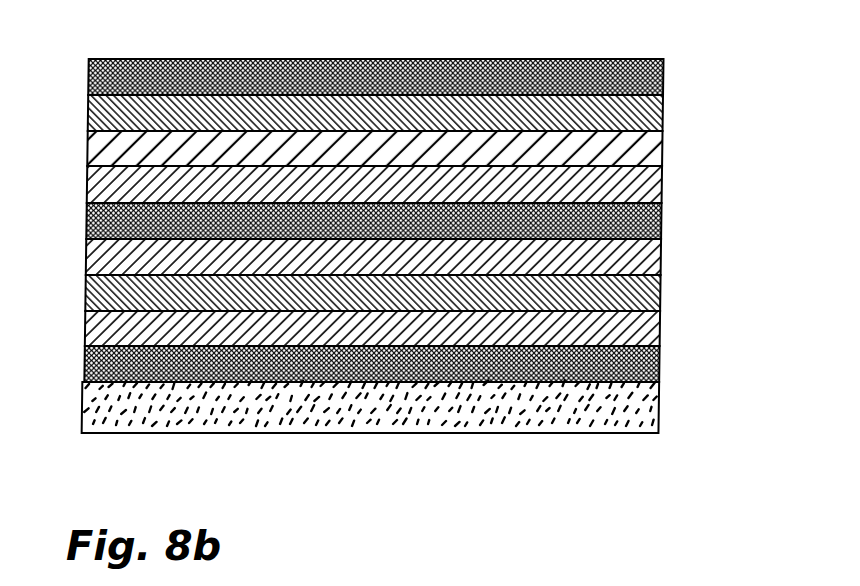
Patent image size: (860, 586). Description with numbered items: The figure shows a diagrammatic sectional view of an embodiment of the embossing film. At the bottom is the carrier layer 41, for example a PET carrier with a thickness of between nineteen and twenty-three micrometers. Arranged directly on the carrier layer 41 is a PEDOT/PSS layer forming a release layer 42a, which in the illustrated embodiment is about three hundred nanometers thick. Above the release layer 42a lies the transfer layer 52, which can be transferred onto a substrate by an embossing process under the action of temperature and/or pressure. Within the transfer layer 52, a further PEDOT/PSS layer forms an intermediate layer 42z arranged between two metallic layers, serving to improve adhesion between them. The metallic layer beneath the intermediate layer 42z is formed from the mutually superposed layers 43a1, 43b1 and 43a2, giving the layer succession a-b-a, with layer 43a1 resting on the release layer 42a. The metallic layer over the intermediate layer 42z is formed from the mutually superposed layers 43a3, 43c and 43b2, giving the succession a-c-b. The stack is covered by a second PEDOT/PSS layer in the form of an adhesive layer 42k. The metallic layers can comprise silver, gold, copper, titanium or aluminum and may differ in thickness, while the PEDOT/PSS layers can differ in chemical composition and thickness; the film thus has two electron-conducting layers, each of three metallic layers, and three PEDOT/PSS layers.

The carrier layer 41 is at (638, 402).
The transfer layer 52 is at (77, 50).
The adhesive layer 42k is at (655, 51).
The metallic layer 43b2 is at (655, 87).
The metallic layer 43c is at (640, 143).
The metallic layer 43a3 is at (652, 172).
The intermediate layer 42z is at (652, 213).
The metallic layer 43a2 is at (650, 250).
The metallic layer 43b1 is at (633, 288).
The metallic layer 43a1 is at (638, 320).
The release layer 42a is at (650, 363).